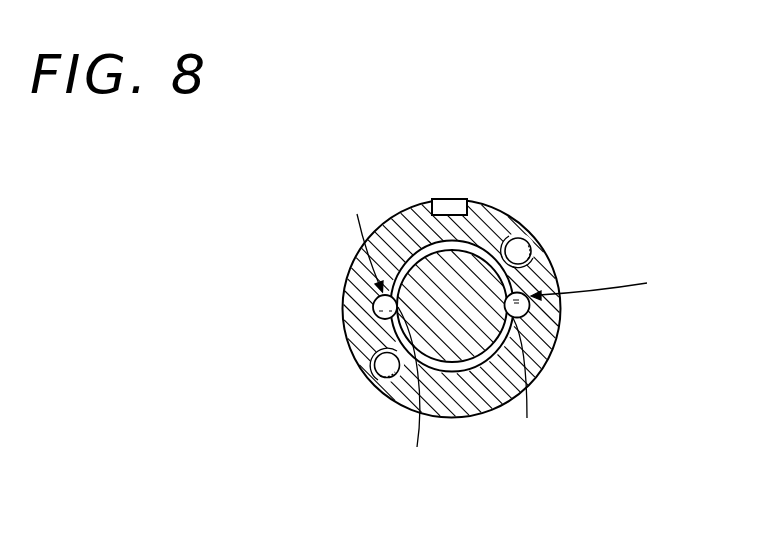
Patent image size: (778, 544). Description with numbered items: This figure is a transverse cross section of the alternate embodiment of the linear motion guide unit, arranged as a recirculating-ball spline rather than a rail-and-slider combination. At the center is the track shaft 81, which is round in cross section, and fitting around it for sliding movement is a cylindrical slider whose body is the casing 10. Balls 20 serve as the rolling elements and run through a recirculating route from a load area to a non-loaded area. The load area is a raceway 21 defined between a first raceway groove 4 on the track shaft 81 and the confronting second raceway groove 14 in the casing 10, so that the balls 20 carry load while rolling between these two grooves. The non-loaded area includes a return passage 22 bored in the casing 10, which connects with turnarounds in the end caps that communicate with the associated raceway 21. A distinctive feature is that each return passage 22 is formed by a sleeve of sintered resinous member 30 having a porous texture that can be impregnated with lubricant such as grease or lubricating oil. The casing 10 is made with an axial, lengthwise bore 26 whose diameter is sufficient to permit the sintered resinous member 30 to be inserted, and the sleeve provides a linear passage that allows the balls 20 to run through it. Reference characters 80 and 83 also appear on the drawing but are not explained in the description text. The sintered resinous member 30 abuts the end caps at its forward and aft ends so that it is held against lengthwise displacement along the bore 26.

The first raceway groove 4 is at (466, 391).
The casing 10 is at (462, 392).
The second raceway groove 14 is at (458, 259).
The balls 20 is at (374, 303).
The raceway 21 is at (499, 248).
The return passage 22 is at (378, 372).
The lengthwise bore 26 is at (393, 381).
The sintered resinous member 30 is at (374, 355).
The clutch 80 is at (452, 312).
The track shaft 81 is at (467, 282).
The notch 83 is at (444, 206).